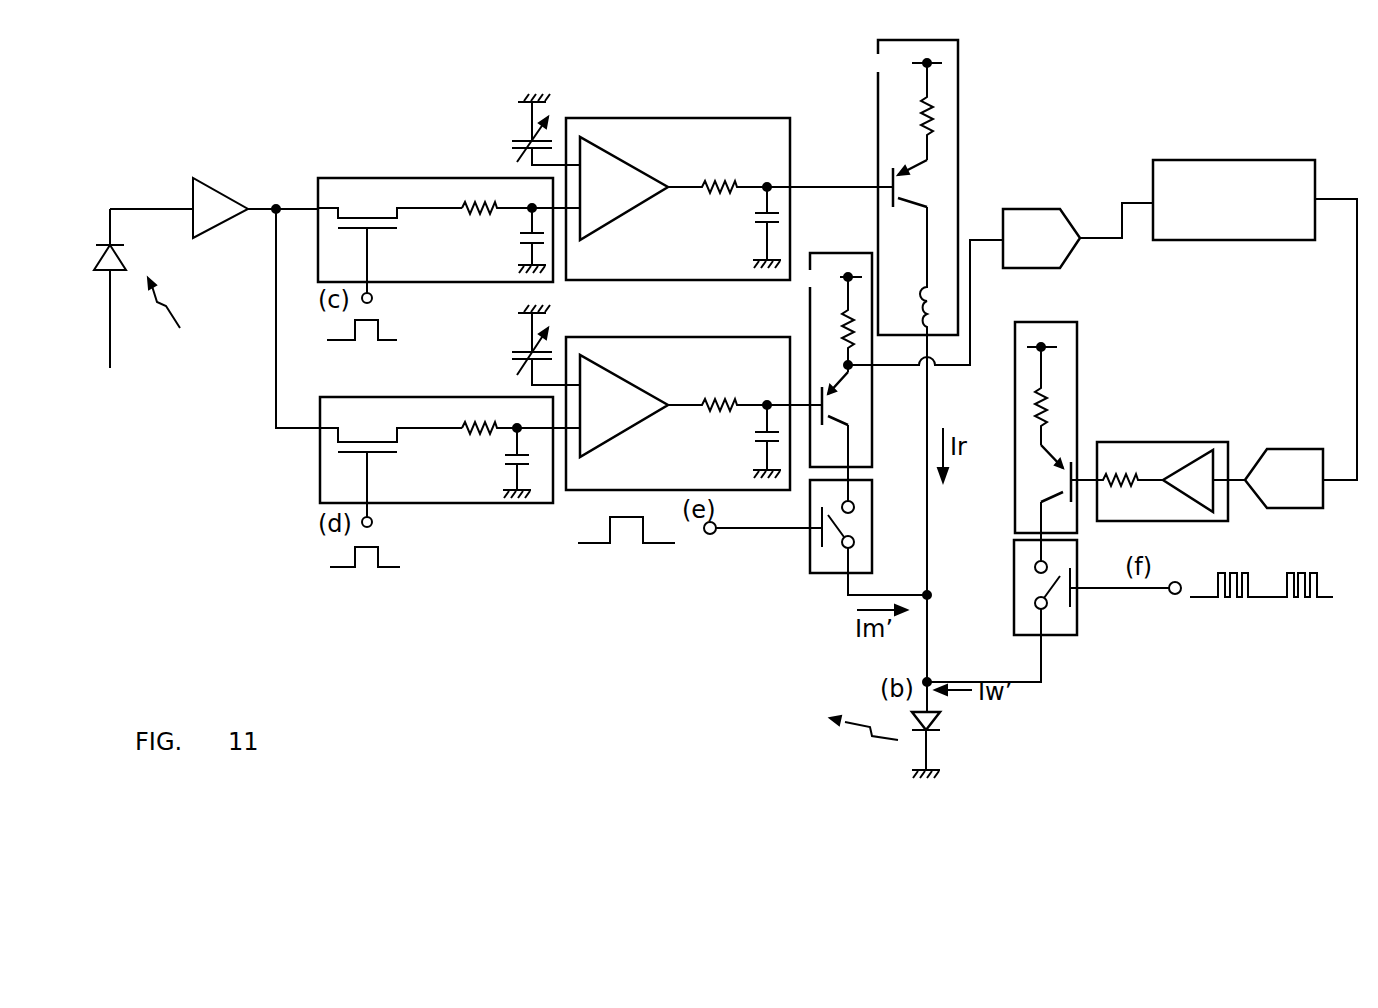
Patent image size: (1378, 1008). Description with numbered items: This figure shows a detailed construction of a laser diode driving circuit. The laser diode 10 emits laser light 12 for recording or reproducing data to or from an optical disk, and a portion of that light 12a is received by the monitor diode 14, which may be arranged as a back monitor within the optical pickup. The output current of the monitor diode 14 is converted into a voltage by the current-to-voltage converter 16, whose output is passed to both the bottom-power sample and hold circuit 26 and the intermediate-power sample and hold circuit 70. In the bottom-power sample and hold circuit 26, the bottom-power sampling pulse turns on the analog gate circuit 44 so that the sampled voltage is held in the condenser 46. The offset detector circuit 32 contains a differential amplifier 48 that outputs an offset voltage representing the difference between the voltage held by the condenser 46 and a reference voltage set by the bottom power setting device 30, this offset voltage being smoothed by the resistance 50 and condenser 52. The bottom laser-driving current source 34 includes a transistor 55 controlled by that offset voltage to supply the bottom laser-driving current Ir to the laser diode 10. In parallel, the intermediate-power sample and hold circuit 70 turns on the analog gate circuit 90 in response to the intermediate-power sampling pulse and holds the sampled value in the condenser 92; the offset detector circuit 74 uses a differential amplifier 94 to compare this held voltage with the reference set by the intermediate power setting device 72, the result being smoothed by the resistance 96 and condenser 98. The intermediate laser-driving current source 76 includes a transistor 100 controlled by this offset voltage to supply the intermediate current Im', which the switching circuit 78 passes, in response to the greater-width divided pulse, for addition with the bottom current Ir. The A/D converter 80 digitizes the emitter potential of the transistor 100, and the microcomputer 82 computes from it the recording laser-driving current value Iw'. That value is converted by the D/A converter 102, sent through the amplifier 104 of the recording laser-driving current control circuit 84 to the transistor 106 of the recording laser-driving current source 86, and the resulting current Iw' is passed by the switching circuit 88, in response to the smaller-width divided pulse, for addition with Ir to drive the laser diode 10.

The laser diode 10 is at (940, 725).
The laser light 12 is at (853, 740).
The reflected light 12a is at (172, 325).
The monitor diode 14 is at (98, 250).
The current-to-voltage converter 16 is at (215, 232).
The bottom-power sample and hold circuit 26 is at (449, 207).
The bottom power setting device 30 is at (522, 142).
The offset detector circuit 32 is at (678, 165).
The bottom laser-driving current source 34 is at (902, 187).
The analog gate circuit 44 is at (375, 230).
The condenser 46 is at (508, 240).
The differential amplifier 48 is at (640, 163).
The resistance 50 is at (722, 178).
The condenser 52 is at (752, 225).
The transistor 55 is at (900, 190).
The intermediate-power sample and hold circuit 70 is at (450, 491).
The intermediate power setting device 72 is at (522, 352).
The offset detector circuit 74 is at (678, 390).
The intermediate laser-driving current source 76 is at (874, 350).
The switching circuit 78 is at (810, 565).
The A/D converter 80 is at (1052, 212).
The microcomputer 82 is at (1235, 160).
The recording laser-driving current control circuit 84 is at (1198, 467).
The recording laser-driving current source 86 is at (1053, 441).
The switching circuit 88 is at (1077, 625).
The analog gate circuit 90 is at (380, 454).
The condenser 92 is at (503, 456).
The differential amplifier 94 is at (628, 432).
The resistance 96 is at (722, 398).
The condenser 98 is at (754, 432).
The transistor 100 is at (830, 404).
The D/A converter 102 is at (1290, 455).
The amplifier 104 is at (1213, 500).
The transistor 106 is at (1032, 482).